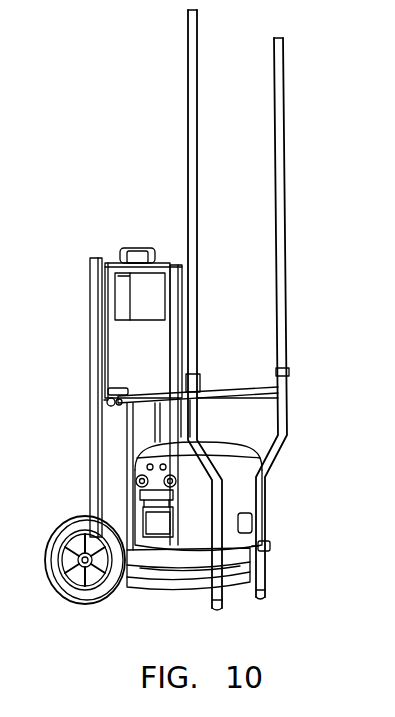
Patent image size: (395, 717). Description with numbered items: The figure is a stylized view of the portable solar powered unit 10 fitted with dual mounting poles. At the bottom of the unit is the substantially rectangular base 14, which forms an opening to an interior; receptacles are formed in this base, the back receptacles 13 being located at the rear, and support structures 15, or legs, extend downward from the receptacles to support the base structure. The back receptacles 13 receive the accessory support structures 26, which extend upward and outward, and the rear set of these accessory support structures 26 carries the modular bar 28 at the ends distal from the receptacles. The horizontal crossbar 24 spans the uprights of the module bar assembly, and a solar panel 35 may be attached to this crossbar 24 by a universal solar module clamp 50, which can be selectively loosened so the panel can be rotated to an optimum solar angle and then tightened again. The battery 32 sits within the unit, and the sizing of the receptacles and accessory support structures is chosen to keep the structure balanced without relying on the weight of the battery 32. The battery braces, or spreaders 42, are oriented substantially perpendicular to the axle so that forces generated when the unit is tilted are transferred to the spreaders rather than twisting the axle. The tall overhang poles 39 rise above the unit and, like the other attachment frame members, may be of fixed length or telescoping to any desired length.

The portable solar powered unit 10 is at (75, 374).
The back receptacles 13 is at (264, 548).
The base 14 is at (152, 596).
The support structures 15 is at (264, 592).
The crossbar 24 is at (152, 393).
The accessory support structures 26 is at (277, 419).
The modular bar 28 is at (231, 390).
The battery 32 is at (246, 452).
The solar panel 35 is at (90, 272).
The overhang pole 39 is at (277, 218).
The spreaders 42 is at (250, 574).
The universal solar module clamp 50 is at (112, 424).